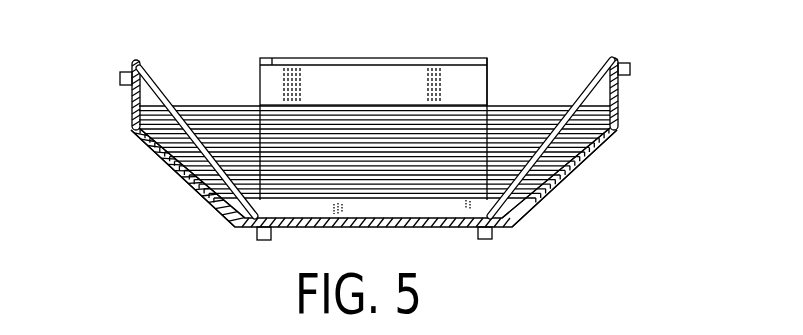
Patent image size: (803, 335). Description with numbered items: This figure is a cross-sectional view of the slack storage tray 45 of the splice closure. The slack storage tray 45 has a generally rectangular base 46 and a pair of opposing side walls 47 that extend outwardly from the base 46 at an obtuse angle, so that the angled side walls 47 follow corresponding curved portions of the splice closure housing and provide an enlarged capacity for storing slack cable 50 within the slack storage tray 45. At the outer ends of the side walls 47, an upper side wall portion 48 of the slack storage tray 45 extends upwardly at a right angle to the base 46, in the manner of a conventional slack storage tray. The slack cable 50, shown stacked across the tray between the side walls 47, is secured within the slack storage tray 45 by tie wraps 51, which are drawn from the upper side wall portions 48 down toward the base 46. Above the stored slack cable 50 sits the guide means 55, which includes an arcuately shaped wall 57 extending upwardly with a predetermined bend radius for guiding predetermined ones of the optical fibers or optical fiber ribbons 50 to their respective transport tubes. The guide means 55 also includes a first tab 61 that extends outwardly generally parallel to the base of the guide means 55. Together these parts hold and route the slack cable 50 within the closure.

The slack storage tray 45 is at (135, 160).
The base 46 is at (440, 230).
The side walls 47 is at (200, 187).
The upper side wall portion 48 is at (132, 102).
The slack cable 50 is at (513, 110).
The tie wraps 51 is at (163, 97).
The guide means 55 is at (358, 48).
The arcuately shaped wall 57 is at (487, 92).
The first tab 61 is at (413, 63).